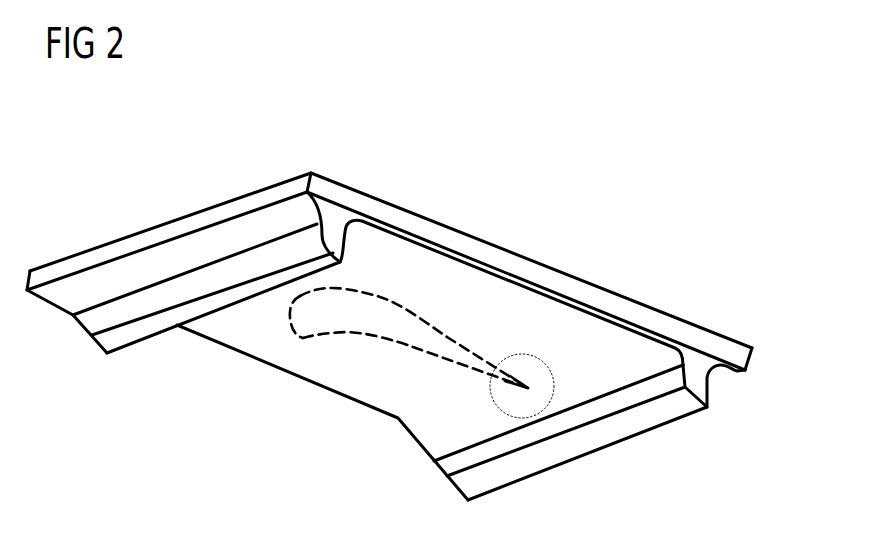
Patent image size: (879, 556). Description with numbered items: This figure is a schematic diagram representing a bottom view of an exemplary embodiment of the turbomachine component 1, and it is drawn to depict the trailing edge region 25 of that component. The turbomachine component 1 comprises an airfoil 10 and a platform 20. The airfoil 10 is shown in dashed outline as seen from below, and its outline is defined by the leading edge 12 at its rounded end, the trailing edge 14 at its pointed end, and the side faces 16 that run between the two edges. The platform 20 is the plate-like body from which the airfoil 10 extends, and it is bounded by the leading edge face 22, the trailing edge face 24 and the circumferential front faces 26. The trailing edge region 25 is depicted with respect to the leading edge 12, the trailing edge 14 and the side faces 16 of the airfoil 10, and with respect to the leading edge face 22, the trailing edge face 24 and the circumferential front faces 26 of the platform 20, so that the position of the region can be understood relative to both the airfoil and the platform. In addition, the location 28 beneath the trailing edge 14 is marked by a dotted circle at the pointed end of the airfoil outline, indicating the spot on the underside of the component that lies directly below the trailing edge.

The turbomachine component 1 is at (498, 206).
The airfoil 10 is at (361, 344).
The leading edge 12 is at (295, 333).
The trailing edge 14 is at (534, 399).
The side faces 16 is at (413, 312).
The platform 20 is at (364, 186).
The leading edge face 22 is at (50, 272).
The trailing edge face 24 is at (758, 360).
The trailing edge region 25 is at (547, 405).
The circumferential front faces 26 is at (697, 338).
The location beneath the trailing edge 28 is at (531, 386).